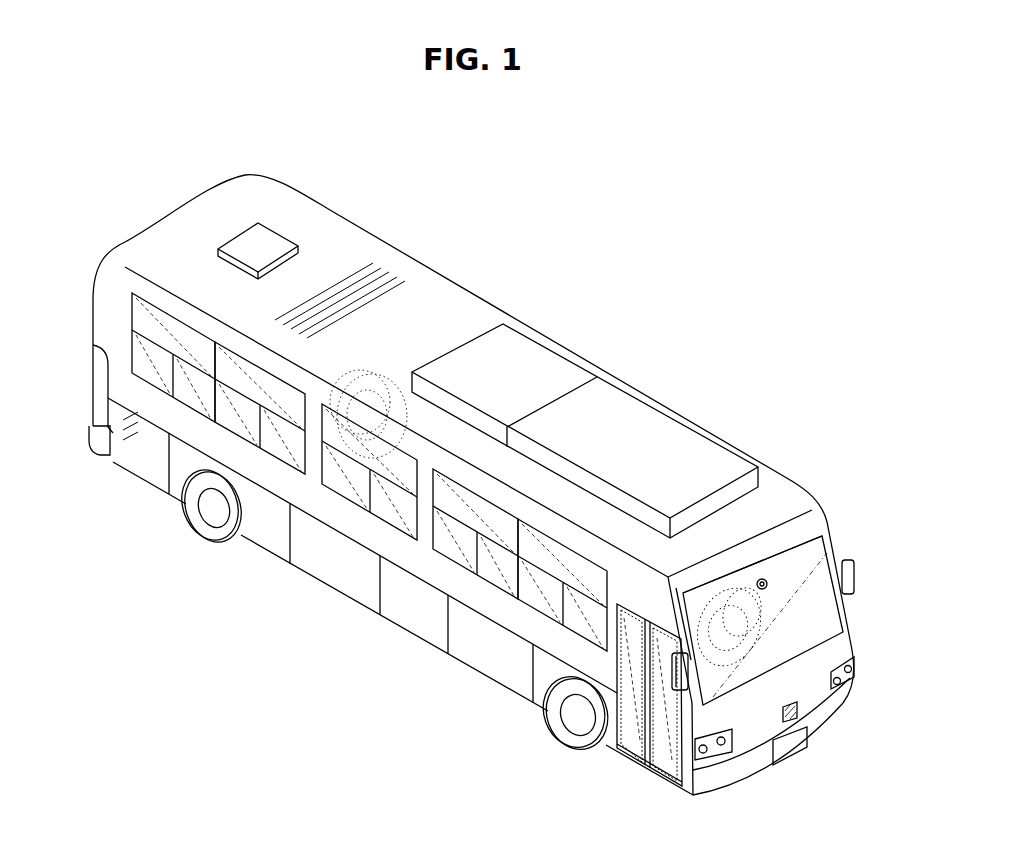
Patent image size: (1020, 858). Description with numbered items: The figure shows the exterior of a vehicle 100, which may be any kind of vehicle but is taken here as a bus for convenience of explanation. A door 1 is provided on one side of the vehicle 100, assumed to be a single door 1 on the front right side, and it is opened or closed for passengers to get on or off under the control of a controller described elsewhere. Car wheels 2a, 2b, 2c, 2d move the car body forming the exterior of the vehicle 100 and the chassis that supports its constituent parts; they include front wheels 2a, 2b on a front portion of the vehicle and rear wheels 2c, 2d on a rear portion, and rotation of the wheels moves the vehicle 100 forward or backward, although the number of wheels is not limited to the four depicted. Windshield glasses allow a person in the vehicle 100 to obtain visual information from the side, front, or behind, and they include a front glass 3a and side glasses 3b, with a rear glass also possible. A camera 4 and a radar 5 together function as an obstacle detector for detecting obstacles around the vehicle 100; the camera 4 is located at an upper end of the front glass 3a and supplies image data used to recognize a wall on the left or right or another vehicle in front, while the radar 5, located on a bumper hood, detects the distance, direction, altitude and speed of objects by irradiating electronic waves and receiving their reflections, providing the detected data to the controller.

The vehicle 100 is at (457, 158).
The door 1 is at (643, 738).
The front wheel 2a is at (763, 620).
The front wheel 2b is at (556, 718).
The rear wheel 2c is at (383, 368).
The rear wheel 2d is at (193, 514).
The front glass 3a is at (827, 612).
The side glasses 3b is at (137, 323).
The camera 4 is at (761, 578).
The radar 5 is at (800, 711).